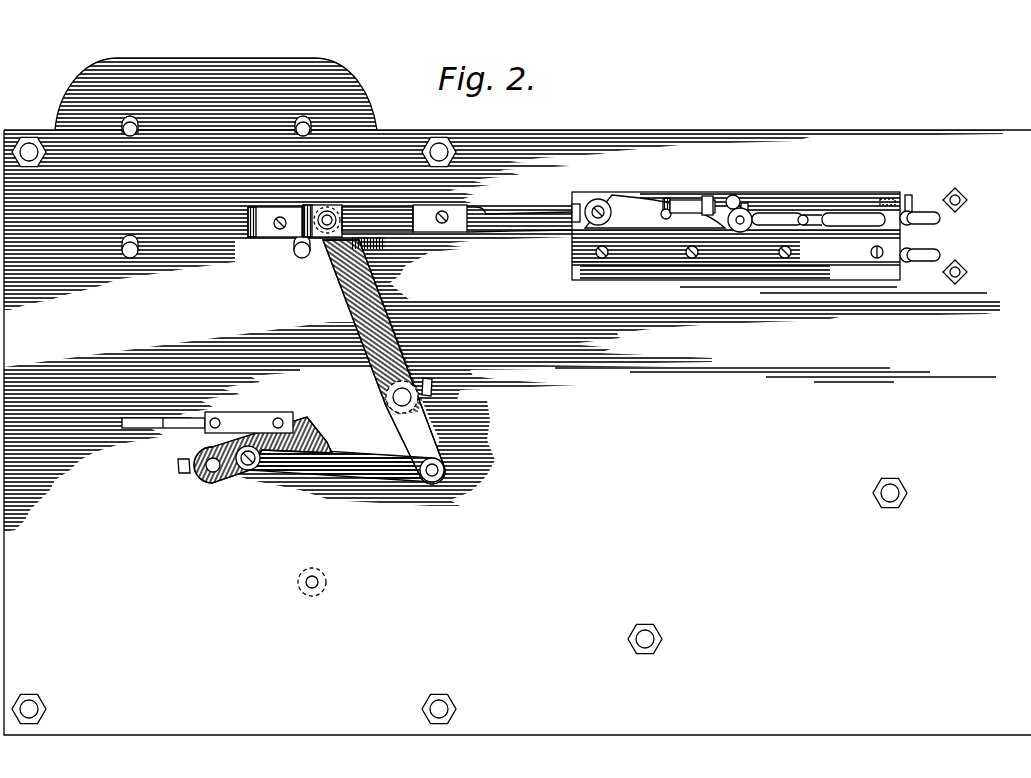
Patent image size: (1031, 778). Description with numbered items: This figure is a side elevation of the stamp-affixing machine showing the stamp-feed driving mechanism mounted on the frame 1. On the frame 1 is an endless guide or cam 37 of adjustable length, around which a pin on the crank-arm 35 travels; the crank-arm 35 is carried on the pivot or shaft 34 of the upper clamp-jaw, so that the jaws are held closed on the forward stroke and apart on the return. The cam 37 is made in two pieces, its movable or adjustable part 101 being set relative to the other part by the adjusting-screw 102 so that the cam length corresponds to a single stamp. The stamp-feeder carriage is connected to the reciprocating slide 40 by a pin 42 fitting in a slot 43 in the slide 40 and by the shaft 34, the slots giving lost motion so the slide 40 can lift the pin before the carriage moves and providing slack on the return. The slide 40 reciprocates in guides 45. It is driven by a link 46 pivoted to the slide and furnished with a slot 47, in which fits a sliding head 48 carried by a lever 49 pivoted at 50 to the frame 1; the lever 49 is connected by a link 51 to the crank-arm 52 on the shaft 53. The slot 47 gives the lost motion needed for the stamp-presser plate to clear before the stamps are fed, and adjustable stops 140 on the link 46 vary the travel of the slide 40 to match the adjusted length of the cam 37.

The frame 1 is at (905, 112).
The pivot or shaft 34 is at (750, 212).
The crank-arm 35 is at (730, 198).
The endless guide or cam 37 is at (680, 195).
The reciprocating slide 40 is at (622, 208).
The pin 42 is at (803, 222).
The slot 43 is at (773, 223).
The guides 45 is at (840, 210).
The link 46 is at (503, 213).
The slot 47 is at (388, 225).
The sliding head 48 is at (320, 208).
The lever 49 is at (383, 327).
The pivot 50 is at (442, 393).
The link 51 is at (340, 453).
The crank-arm 52 is at (228, 413).
The shaft 53 is at (205, 483).
The movable or adjustable part 101 is at (700, 222).
The adjusting-screw 102 is at (905, 210).
The adjustable stops 140 is at (460, 205).